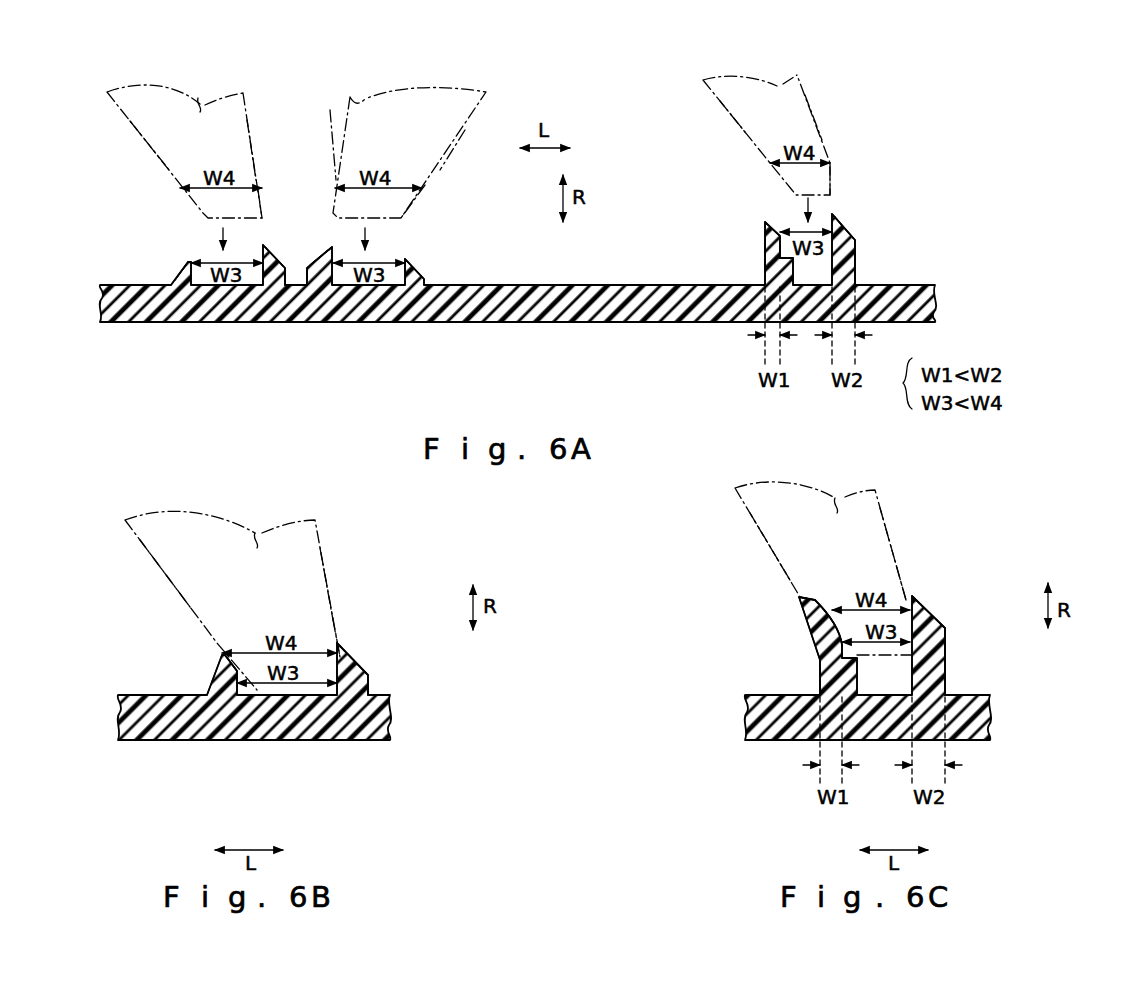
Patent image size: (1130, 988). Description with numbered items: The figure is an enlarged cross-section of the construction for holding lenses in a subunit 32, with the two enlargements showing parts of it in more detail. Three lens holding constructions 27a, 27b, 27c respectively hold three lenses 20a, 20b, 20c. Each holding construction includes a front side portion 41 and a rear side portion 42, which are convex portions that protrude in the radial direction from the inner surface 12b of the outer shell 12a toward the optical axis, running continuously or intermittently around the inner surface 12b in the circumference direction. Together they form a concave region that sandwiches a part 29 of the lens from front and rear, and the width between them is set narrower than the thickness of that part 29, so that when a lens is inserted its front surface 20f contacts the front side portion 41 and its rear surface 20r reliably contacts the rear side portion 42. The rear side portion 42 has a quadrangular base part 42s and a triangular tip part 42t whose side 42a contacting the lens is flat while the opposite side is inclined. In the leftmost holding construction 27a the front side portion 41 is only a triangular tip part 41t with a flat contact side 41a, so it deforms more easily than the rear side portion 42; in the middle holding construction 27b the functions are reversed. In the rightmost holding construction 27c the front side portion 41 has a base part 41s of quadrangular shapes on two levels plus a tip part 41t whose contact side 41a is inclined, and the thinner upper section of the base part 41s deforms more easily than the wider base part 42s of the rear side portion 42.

In FIG. 6A, the outer shell 12a is at (525, 310).
In FIG. 6B, the outer shell 12a is at (322, 738).
In FIG. 6C, the outer shell 12a is at (882, 738).
In FIG. 6A, the inner surface 12b is at (497, 284).
In FIG. 6B, the inner surface 12b is at (180, 700).
In FIG. 6C, the inner surface 12b is at (763, 700).
In FIG. 6A, the lens 20a is at (201, 106).
In FIG. 6B, the lens 20a is at (320, 547).
In FIG. 6A, the lens 20b is at (437, 88).
In FIG. 6C, the lens 20b is at (885, 512).
In FIG. 6A, the lens 20c is at (790, 77).
In FIG. 6A, the front surface 20f is at (170, 186).
In FIG. 6B, the front surface 20f is at (152, 574).
In FIG. 6C, the front surface 20f is at (778, 545).
In FIG. 6A, the rear surface 20r is at (248, 172).
In FIG. 6B, the rear surface 20r is at (330, 585).
In FIG. 6C, the rear surface 20r is at (897, 548).
In FIG. 6A, the lens holding construction 27a is at (268, 228).
In FIG. 6B, the lens holding construction 27a is at (352, 648).
In FIG. 6A, the lens holding construction 27b is at (440, 238).
In FIG. 6A, the lens holding construction 27c is at (850, 212).
In FIG. 6C, the lens holding construction 27c is at (983, 568).
In FIG. 6A, the part of the lens 29 is at (250, 132).
In FIG. 6B, the part of the lens 29 is at (334, 630).
In FIG. 6C, the part of the lens 29 is at (900, 592).
In FIG. 6A, the subunit 32 is at (578, 360).
In FIG. 6B, the subunit 32 is at (412, 768).
In FIG. 6C, the subunit 32 is at (987, 768).
In FIG. 6A, the front side portion 41 is at (178, 278).
In FIG. 6B, the front side portion 41 is at (225, 690).
In FIG. 6C, the front side portion 41 is at (825, 654).
In FIG. 6A, the tip part 41t is at (188, 262).
In FIG. 6B, the tip part 41t is at (222, 659).
In FIG. 6C, the tip part 41t is at (803, 600).
In FIG. 6A, the side 41a is at (186, 286).
In FIG. 6B, the side 41a is at (222, 677).
In FIG. 6C, the side 41a is at (838, 638).
In FIG. 6A, the base part 41s is at (327, 275).
In FIG. 6C, the base part 41s is at (826, 670).
In FIG. 6A, the rear side portion 42 is at (278, 258).
In FIG. 6B, the rear side portion 42 is at (372, 676).
In FIG. 6C, the rear side portion 42 is at (937, 628).
In FIG. 6A, the tip part 42t is at (265, 254).
In FIG. 6B, the tip part 42t is at (346, 653).
In FIG. 6C, the tip part 42t is at (920, 613).
In FIG. 6A, the side 42a is at (268, 288).
In FIG. 6B, the side 42a is at (345, 668).
In FIG. 6C, the side 42a is at (948, 640).
In FIG. 6A, the base part 42s is at (284, 272).
In FIG. 6B, the base part 42s is at (372, 688).
In FIG. 6C, the base part 42s is at (948, 660).